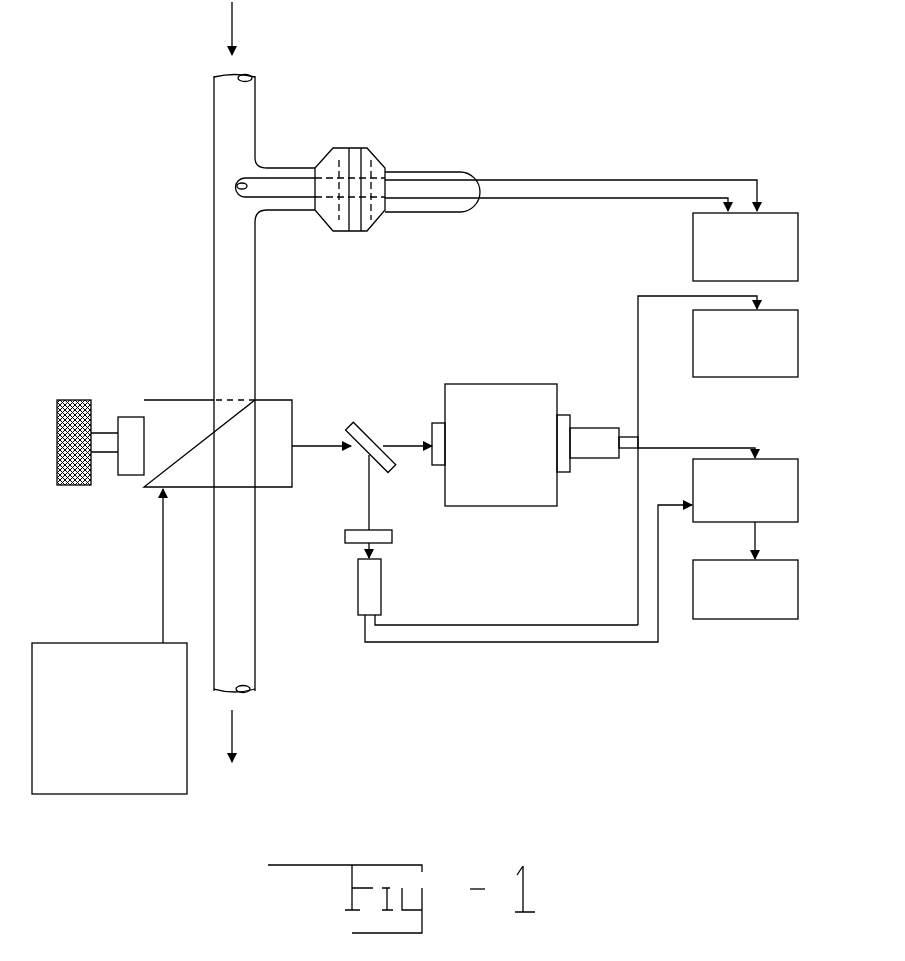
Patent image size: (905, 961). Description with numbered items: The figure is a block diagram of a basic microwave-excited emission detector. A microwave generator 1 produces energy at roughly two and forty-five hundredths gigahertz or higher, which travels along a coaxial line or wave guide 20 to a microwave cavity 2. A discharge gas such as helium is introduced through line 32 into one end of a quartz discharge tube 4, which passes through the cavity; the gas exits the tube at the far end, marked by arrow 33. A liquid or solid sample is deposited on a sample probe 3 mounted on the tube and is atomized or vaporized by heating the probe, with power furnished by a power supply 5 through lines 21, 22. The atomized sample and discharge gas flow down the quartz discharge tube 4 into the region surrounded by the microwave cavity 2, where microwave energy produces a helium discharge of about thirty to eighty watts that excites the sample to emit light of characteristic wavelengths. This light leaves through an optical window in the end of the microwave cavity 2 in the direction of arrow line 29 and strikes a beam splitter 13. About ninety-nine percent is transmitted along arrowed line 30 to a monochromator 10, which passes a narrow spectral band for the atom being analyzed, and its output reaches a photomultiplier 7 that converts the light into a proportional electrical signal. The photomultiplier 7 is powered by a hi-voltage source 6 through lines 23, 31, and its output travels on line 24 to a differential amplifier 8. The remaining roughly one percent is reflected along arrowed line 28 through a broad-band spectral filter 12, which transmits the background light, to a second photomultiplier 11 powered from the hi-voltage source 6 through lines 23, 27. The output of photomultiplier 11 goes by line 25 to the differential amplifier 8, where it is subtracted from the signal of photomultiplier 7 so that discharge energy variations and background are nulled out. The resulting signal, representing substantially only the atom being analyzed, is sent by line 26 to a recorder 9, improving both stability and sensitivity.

The microwave generator 1 is at (90, 805).
The microwave cavity 2 is at (160, 400).
The sample probe 3 is at (241, 183).
The quartz discharge tube 4 is at (238, 358).
The power supply 5 is at (800, 262).
The hi-voltage source 6 is at (800, 365).
The photomultiplier 7 is at (543, 327).
The differential amplifier 8 is at (800, 500).
The recorder 9 is at (803, 597).
The monochromator 10 is at (480, 381).
The photomultiplier 11 is at (381, 598).
The spectral filter 12 is at (372, 537).
The beam splitter 13 is at (358, 423).
The coaxial line or wave guide 20 is at (163, 570).
The line 21 is at (555, 178).
The line 22 is at (565, 200).
The line 23 is at (638, 338).
The line 24 is at (685, 447).
The line 25 is at (540, 645).
The line 26 is at (757, 540).
The line 27 is at (495, 625).
The arrowed line 28 is at (375, 548).
The arrow line 29 is at (322, 447).
The arrowed line 30 is at (412, 448).
The line 31 is at (630, 437).
The line 32 is at (234, 33).
The gas flow outlet direction 33 is at (234, 730).